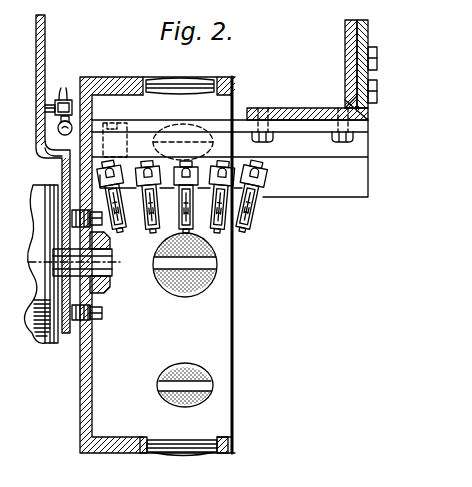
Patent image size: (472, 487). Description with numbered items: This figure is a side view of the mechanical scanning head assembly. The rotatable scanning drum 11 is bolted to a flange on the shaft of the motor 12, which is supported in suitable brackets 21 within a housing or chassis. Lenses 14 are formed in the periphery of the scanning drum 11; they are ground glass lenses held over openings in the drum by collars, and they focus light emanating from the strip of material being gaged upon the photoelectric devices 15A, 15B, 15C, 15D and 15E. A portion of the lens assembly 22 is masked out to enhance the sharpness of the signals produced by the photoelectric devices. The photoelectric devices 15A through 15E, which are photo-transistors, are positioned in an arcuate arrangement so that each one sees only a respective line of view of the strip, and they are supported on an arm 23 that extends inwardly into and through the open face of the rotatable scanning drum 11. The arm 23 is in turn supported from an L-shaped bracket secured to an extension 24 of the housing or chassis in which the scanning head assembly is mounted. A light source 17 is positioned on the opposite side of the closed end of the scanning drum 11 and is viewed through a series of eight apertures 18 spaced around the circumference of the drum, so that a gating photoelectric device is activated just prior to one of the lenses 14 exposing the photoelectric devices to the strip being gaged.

The rotatable scanning drum 11 is at (88, 392).
The motor 12 is at (41, 337).
The lens 14 is at (188, 272).
The photoelectric device 15A is at (250, 232).
The photoelectric device 15B is at (216, 233).
The photoelectric device 15C is at (193, 232).
The photoelectric device 15D is at (151, 233).
The photoelectric device 15E is at (124, 238).
The light source 17 is at (58, 127).
The apertures 18 is at (89, 127).
The brackets 21 is at (36, 66).
The masked portion of lens assembly 22 is at (196, 374).
The arm 23 is at (239, 121).
The extension 24 is at (345, 36).